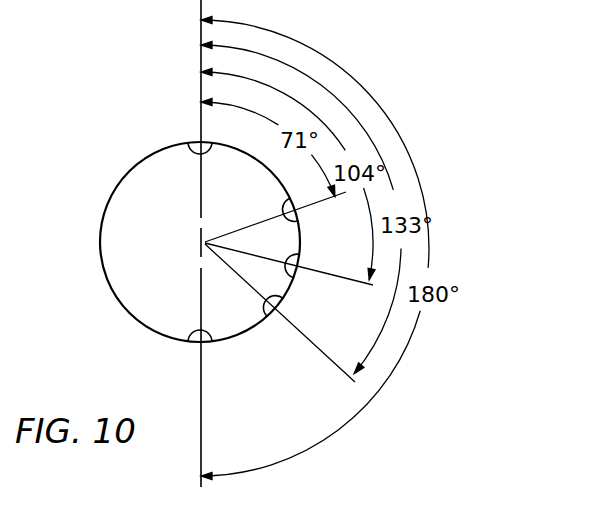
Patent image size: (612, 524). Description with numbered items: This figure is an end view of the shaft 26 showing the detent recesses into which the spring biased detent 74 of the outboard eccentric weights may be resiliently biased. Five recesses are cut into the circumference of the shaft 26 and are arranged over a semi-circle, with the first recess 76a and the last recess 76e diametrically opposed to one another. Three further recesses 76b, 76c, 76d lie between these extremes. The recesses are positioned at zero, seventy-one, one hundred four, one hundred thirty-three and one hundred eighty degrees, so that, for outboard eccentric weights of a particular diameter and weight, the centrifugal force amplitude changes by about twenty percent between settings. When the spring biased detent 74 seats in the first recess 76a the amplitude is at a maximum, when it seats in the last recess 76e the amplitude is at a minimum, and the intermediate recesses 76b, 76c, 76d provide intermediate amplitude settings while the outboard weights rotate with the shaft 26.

The spring biased detent 74 is at (100, 243).
The shaft 26 is at (114, 188).
The first recess 76a is at (197, 142).
The recess 76b is at (302, 212).
The recess 76c is at (293, 272).
The recess 76d is at (271, 314).
The last recess 76e is at (196, 344).